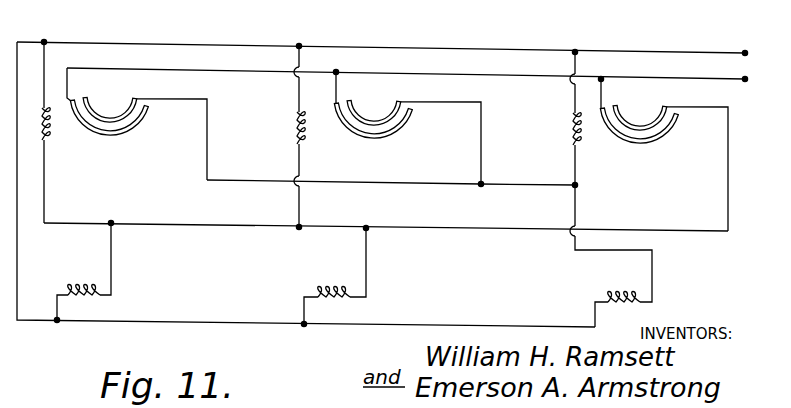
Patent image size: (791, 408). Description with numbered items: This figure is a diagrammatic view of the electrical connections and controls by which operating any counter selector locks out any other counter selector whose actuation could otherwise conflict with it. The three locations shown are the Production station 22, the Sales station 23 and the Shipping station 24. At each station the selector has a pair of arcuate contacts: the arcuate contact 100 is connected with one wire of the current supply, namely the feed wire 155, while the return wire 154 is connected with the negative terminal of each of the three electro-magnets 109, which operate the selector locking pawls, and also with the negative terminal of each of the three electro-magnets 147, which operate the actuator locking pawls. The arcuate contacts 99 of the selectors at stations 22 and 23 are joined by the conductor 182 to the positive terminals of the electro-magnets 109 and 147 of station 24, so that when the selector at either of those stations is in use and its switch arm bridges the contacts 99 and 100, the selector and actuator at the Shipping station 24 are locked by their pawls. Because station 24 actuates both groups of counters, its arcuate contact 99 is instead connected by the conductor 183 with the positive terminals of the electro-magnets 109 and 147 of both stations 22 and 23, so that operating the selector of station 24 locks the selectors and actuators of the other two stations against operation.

The return wire 154 is at (462, 48).
The feed wire 155 is at (452, 76).
The electro-magnet 109 is at (50, 133).
The arcuate contact 99 is at (108, 119).
The arcuate contact 100 is at (128, 131).
The Production station 22 is at (138, 202).
The Sales station 23 is at (385, 175).
The Shipping station 24 is at (668, 198).
The conductor 182 is at (226, 181).
The conductor 183 is at (438, 230).
The electro-magnet 147 is at (86, 266).